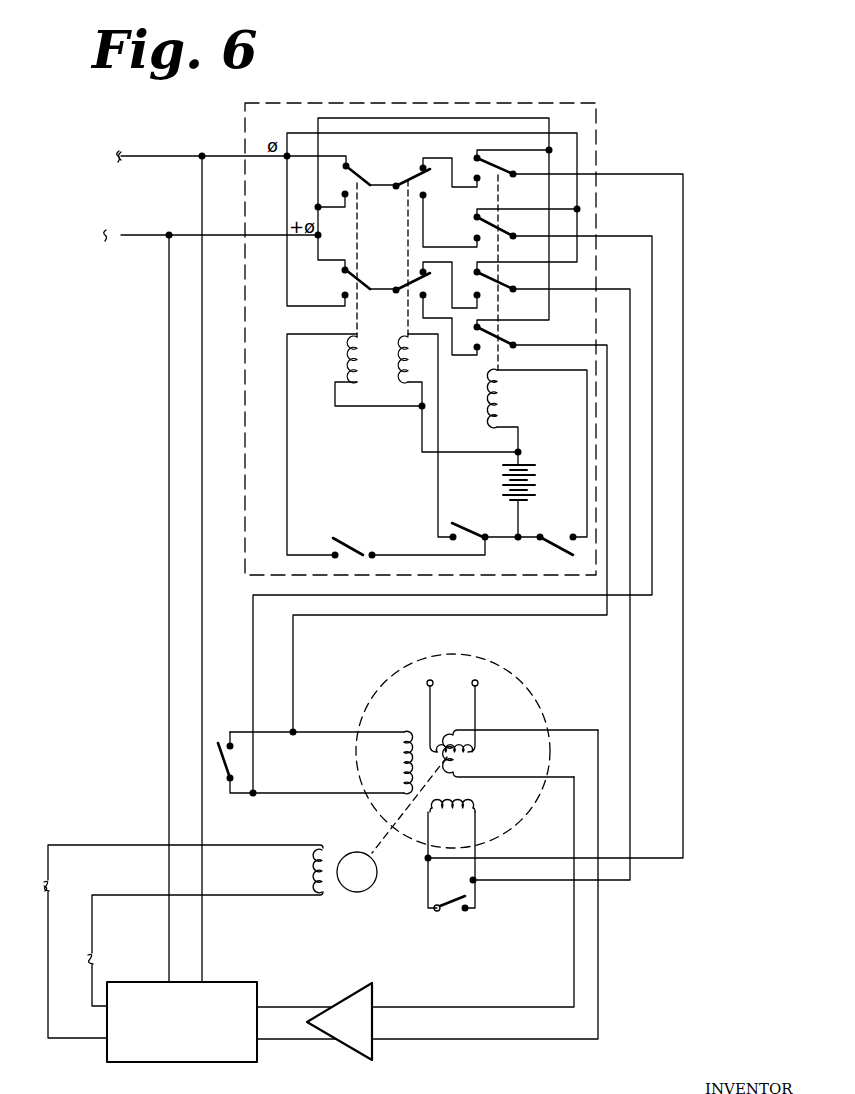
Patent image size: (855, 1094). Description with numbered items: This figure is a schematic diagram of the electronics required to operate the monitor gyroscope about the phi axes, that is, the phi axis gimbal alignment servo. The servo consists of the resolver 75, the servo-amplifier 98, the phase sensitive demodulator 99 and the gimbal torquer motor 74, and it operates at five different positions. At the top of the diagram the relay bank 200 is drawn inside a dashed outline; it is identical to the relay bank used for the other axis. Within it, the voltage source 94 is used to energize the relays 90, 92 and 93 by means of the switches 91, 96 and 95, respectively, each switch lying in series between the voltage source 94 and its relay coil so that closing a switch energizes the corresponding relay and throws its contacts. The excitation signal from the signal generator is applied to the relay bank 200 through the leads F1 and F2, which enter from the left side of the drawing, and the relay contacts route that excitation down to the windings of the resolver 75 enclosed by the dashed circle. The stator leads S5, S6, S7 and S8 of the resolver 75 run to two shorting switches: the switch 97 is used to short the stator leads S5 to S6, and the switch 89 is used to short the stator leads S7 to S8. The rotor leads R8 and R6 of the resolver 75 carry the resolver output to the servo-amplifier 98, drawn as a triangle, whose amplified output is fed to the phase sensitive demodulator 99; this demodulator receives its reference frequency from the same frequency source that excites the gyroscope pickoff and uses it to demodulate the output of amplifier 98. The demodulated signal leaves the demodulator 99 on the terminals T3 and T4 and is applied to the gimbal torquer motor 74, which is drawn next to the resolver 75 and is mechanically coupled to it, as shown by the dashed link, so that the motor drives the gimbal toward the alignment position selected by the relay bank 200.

The relay bank 200 is at (580, 131).
The relay 92 is at (351, 359).
The relay 90 is at (414, 359).
The relay 93 is at (501, 393).
The voltage source 94 is at (523, 468).
The switch 96 is at (355, 550).
The switch 91 is at (483, 528).
The switch 95 is at (552, 548).
The resolver 75 is at (494, 690).
The switch 97 is at (219, 767).
The gimbal torquer motor 74 is at (363, 890).
The switch 89 is at (446, 910).
The servo-amplifier 98 is at (350, 991).
The phase sensitive demodulator 99 is at (212, 982).
The stator lead S5 is at (322, 732).
The stator lead S6 is at (314, 794).
The stator lead S7 is at (428, 880).
The stator lead S8 is at (477, 866).
The rotor winding terminal R8 is at (574, 730).
The rotor winding terminal R6 is at (555, 779).
The lead F1 is at (148, 156).
The lead F2 is at (133, 235).
The demodulator input terminal T3 is at (48, 916).
The demodulator input terminal T4 is at (92, 971).